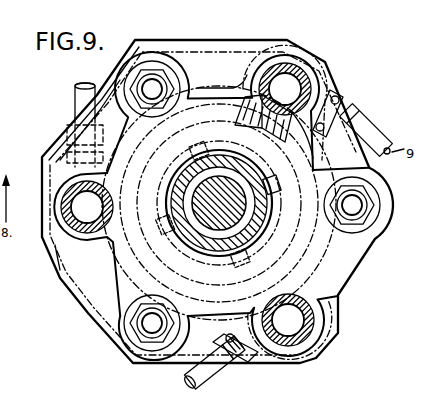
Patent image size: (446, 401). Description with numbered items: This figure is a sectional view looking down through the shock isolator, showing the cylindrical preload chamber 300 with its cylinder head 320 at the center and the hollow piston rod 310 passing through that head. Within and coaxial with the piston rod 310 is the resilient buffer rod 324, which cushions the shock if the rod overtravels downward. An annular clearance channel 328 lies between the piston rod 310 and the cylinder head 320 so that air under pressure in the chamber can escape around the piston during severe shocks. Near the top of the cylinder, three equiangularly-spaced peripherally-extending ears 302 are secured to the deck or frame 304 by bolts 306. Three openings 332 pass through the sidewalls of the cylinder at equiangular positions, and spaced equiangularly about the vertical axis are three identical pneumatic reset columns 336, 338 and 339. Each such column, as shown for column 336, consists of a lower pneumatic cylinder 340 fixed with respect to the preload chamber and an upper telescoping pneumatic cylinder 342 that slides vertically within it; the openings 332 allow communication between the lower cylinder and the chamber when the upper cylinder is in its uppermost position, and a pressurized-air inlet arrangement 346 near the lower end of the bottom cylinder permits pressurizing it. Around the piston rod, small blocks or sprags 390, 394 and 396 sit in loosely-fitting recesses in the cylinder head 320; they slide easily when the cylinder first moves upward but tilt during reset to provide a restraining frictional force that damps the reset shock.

The preload chamber 300 is at (311, 255).
The ears 302 is at (147, 52).
The frame 304 is at (112, 80).
The bolts 306 is at (153, 88).
The piston rod 310 is at (198, 247).
The cylinder head 320 is at (280, 238).
The buffer rod 324 is at (218, 203).
The annular clearance channel 328 is at (263, 161).
The openings 332 is at (276, 262).
The pneumatic reset column 336 is at (78, 237).
The pneumatic reset column 338 is at (283, 63).
The pneumatic reset column 339 is at (290, 347).
The lower pneumatic cylinder 340 is at (99, 250).
The upper telescoping pneumatic cylinder 342 is at (65, 221).
The pressurized-air inlet arrangement 346 is at (73, 105).
The block 390 is at (231, 259).
The block 394 is at (171, 231).
The block 396 is at (192, 158).